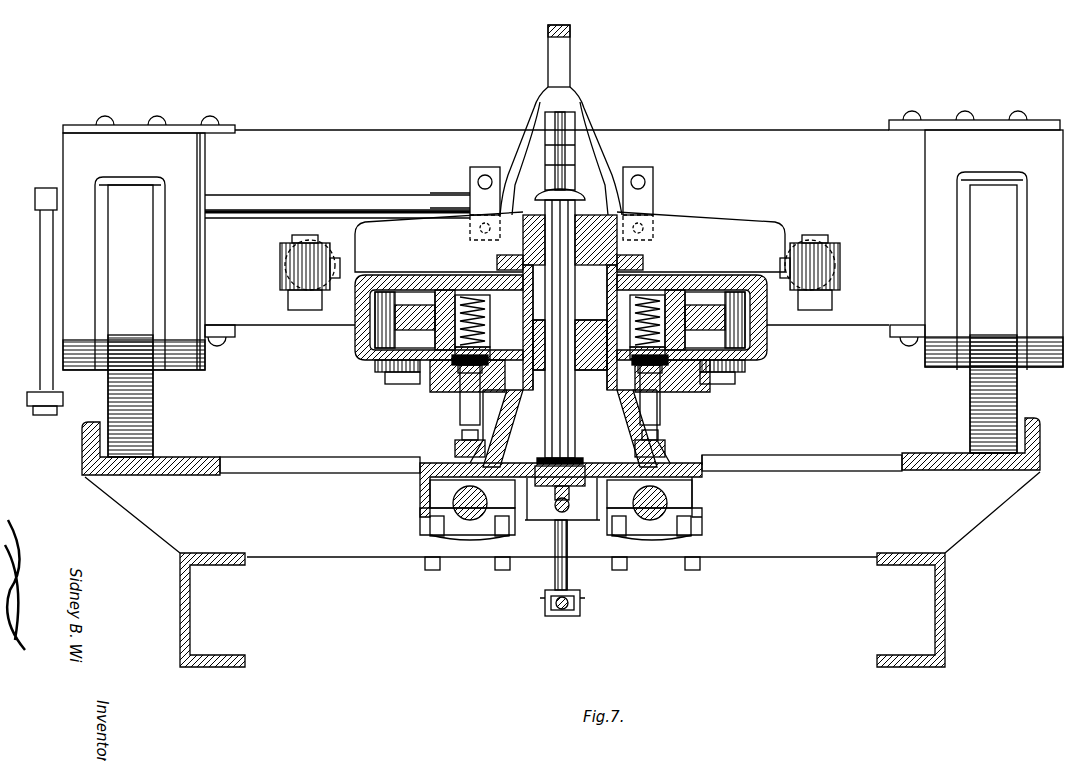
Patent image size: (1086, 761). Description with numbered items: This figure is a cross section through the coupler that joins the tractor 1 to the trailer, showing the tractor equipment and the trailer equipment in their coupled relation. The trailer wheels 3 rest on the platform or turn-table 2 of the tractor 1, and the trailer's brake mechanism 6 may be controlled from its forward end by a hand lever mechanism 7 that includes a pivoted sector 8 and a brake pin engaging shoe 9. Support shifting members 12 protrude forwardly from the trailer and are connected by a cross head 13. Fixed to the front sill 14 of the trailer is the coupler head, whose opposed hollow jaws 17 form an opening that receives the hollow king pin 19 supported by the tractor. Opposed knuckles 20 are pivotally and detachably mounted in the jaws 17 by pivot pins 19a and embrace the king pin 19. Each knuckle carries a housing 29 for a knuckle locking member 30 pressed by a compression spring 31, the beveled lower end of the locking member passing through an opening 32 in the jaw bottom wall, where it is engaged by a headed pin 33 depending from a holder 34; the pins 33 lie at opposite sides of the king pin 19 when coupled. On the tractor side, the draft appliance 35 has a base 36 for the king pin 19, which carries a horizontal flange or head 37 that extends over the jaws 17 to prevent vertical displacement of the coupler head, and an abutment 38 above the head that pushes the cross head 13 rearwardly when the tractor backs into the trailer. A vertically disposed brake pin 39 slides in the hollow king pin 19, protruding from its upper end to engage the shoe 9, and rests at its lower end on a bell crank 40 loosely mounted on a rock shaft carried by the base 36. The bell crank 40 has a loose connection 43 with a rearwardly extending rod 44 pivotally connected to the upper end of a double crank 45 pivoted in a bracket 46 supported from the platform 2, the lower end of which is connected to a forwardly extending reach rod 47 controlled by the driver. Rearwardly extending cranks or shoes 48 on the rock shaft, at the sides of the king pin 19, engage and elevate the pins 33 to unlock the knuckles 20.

The tractor 1 is at (180, 612).
The platform or turn-table 2 is at (853, 457).
The wheels 3 is at (140, 403).
The brake mechanism 6 is at (42, 352).
The hand lever mechanism 7 is at (555, 66).
The pivoted sector 8 is at (553, 138).
The brake pin engaging shoe 9 is at (575, 195).
The support shifting members 12 is at (325, 255).
The cross head 13 is at (672, 230).
The front sill 14 is at (358, 115).
The jaws 17 is at (358, 345).
The king pin 19 is at (740, 376).
The pivot pins 19a is at (395, 383).
The knuckles 20 is at (405, 300).
The housing 29 is at (443, 290).
The knuckle locking members 30 is at (432, 372).
The compression springs 31 is at (472, 295).
The openings 32 is at (458, 356).
The headed pins 33 is at (462, 420).
The holders 34 is at (450, 395).
The draft appliance 35 is at (472, 512).
The base 36 is at (455, 450).
The flange or head 37 is at (617, 262).
The abutment 38 is at (610, 215).
The brake pin 39 is at (553, 425).
The bell crank 40 is at (578, 475).
The loose connection 43 is at (700, 460).
The rod 44 is at (535, 553).
The double crank 45 is at (555, 575).
The bracket 46 is at (580, 530).
The reach rod 47 is at (558, 615).
The cranks or shoes 48 is at (456, 446).